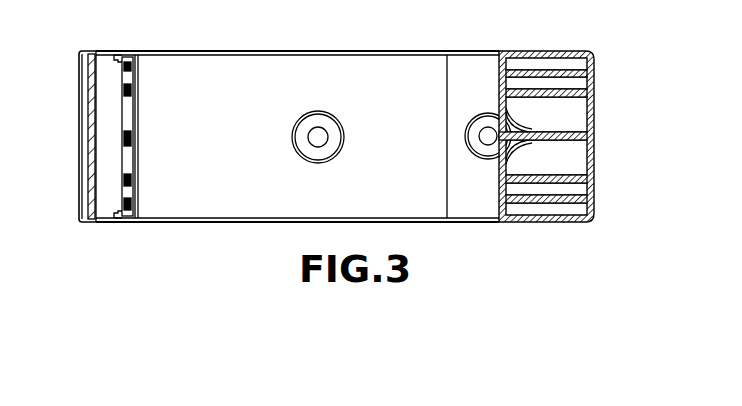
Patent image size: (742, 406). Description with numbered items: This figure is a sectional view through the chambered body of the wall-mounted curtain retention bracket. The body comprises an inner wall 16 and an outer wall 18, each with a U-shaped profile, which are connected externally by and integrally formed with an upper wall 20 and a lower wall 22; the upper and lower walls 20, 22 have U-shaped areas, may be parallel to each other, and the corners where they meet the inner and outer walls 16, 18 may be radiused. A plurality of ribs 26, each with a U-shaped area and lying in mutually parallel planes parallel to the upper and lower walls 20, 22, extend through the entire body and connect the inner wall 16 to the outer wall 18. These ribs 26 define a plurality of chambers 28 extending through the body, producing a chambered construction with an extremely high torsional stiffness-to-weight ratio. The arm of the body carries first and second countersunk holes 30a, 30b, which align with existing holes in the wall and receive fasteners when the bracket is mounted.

The inner wall 16 is at (342, 70).
The outer wall 18 is at (597, 163).
The upper wall 20 is at (200, 50).
The lower wall 22 is at (246, 222).
The ribs 26 is at (547, 96).
The chambers 28 is at (579, 153).
The first countersunk hole 30a is at (345, 133).
The second countersunk hole 30b is at (478, 158).